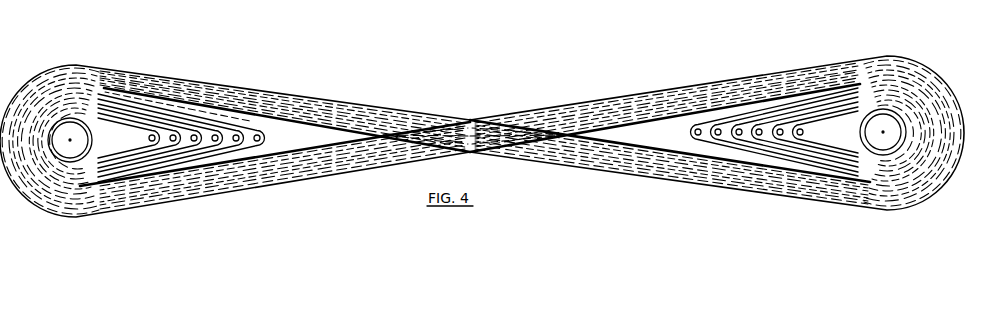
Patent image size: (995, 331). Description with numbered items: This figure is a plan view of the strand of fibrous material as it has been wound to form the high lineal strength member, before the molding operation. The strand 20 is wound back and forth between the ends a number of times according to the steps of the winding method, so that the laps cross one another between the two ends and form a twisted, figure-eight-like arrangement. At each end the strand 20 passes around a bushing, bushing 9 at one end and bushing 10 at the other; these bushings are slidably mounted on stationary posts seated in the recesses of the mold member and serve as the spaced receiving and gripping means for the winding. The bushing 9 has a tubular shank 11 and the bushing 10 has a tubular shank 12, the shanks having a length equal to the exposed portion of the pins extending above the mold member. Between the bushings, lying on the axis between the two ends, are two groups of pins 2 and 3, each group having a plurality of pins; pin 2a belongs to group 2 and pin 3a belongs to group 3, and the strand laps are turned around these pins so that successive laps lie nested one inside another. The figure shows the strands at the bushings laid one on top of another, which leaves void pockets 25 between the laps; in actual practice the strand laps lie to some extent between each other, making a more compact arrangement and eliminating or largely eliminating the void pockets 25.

The group of pins 2 is at (257, 131).
The pin 2a is at (153, 134).
The group of pins 3 is at (698, 128).
The pin 3a is at (801, 128).
The bushing 9 is at (72, 115).
The bushing 10 is at (895, 106).
The tubular shank 11 is at (94, 140).
The tubular shank 12 is at (859, 134).
The strand 20 is at (289, 93).
The void pockets 25 is at (333, 137).